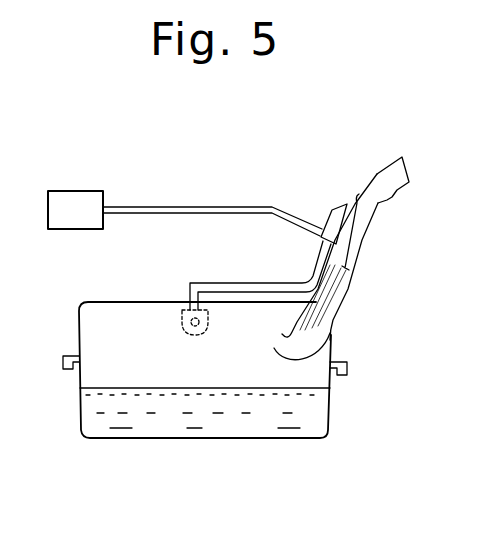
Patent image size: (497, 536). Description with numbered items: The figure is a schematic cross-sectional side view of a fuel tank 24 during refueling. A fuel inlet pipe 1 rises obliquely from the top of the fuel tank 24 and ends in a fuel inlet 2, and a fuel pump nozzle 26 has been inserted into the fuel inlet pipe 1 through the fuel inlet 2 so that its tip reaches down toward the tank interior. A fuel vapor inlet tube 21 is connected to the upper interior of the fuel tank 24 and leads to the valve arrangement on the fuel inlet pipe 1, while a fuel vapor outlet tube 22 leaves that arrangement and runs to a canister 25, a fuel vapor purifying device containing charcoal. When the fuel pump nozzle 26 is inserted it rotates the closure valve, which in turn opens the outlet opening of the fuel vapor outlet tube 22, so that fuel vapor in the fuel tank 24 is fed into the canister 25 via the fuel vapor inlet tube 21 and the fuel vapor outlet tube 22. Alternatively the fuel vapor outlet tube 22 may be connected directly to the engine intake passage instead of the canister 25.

The fuel inlet pipe 1 is at (357, 258).
The fuel inlet 2 is at (384, 209).
The fuel vapor inlet tube 21 is at (314, 258).
The fuel vapor outlet tube 22 is at (280, 206).
The fuel tank 24 is at (110, 439).
The canister 25 is at (78, 191).
The fuel pump nozzle 26 is at (387, 167).